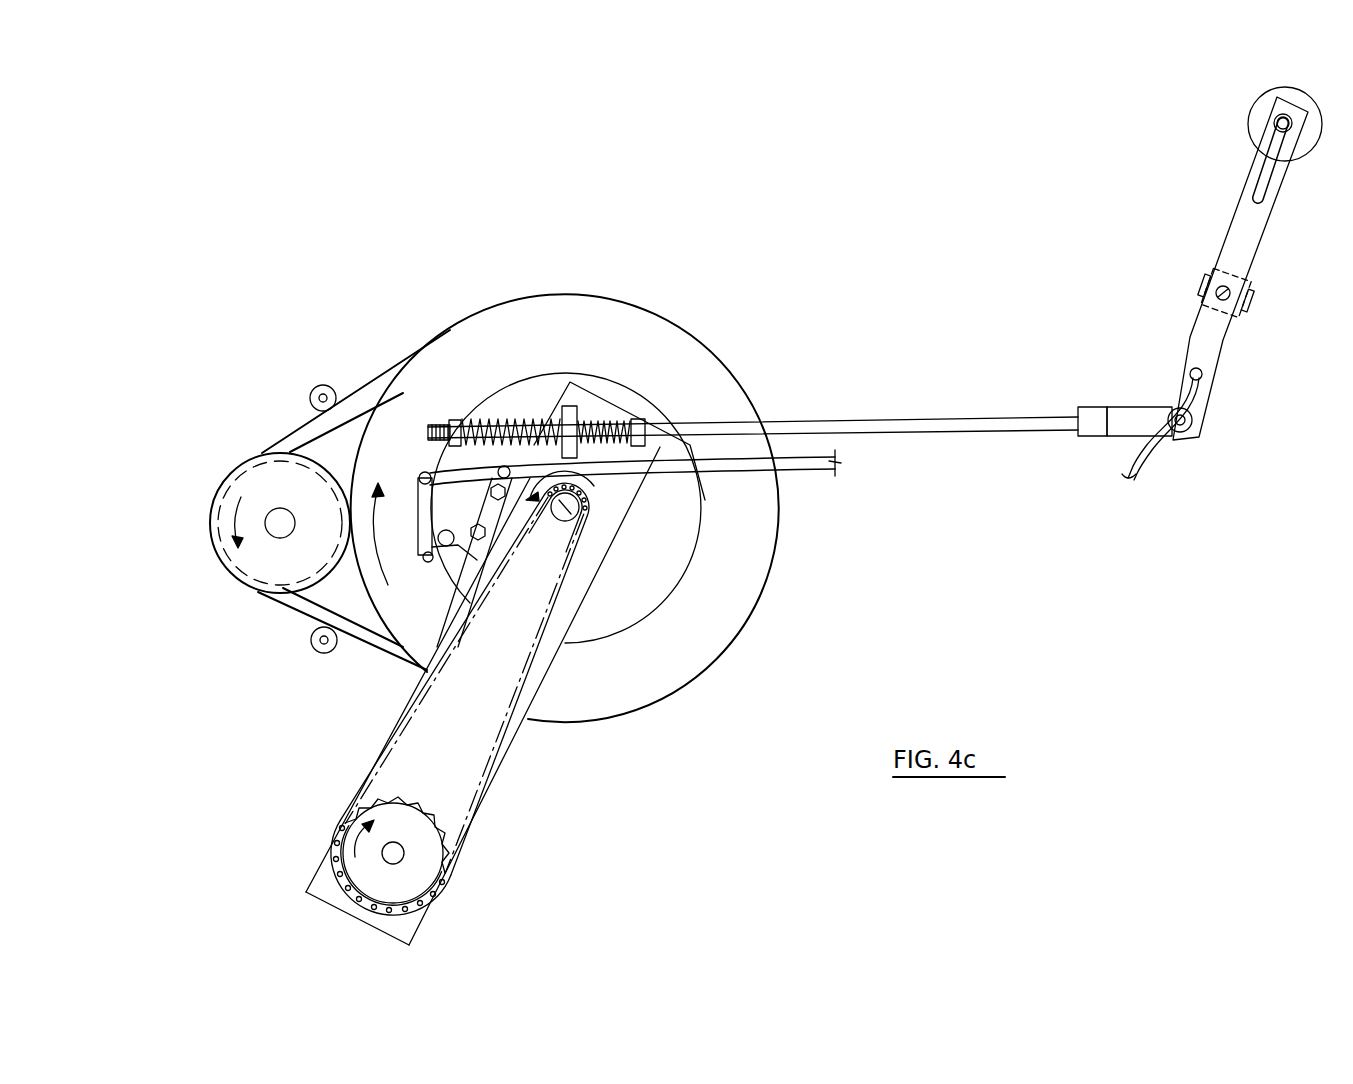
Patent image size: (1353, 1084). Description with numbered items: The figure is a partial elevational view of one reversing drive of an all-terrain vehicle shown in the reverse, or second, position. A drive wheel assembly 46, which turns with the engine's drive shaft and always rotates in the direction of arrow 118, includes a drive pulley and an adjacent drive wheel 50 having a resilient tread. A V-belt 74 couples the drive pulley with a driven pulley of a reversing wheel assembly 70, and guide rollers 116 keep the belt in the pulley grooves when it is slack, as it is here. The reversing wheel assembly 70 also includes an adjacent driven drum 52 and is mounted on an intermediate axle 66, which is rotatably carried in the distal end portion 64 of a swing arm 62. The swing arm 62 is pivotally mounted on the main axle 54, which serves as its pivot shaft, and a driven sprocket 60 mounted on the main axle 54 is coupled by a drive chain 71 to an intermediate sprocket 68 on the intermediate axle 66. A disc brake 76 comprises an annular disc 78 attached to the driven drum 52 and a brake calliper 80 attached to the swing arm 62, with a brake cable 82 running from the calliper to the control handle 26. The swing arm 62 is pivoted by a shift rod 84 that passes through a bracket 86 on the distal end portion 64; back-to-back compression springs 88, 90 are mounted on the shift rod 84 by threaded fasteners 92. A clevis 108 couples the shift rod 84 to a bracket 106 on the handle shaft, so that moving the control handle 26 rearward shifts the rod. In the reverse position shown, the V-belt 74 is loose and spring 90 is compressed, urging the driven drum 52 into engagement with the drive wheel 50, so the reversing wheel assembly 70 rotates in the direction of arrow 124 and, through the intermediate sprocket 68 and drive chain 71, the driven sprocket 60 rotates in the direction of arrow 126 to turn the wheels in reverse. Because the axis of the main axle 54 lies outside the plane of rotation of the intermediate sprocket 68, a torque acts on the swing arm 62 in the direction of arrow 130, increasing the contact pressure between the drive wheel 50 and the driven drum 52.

The control handle 26 is at (1270, 265).
The drive wheel assembly 46 is at (208, 518).
The drive wheel 50 is at (252, 477).
The driven drum 52 is at (358, 572).
The main axle 54 is at (385, 853).
The driven sprocket 60 is at (430, 858).
The swing arm 62 is at (513, 740).
The distal end portion 64 is at (585, 395).
The intermediate axle 66 is at (580, 510).
The intermediate sprocket 68 is at (558, 528).
The reversing wheel assembly 70 is at (630, 302).
The drive chain 71 is at (380, 752).
The V-belt 74 is at (380, 385).
The disc brake 76 is at (440, 583).
The annular disc 78 is at (715, 633).
The brake calliper 80 is at (418, 548).
The brake cable 82 is at (807, 470).
The shift rod 84 is at (860, 418).
The bracket 86 is at (567, 405).
The compression spring 88 is at (505, 424).
The compression spring 90 is at (610, 420).
The threaded fastener 92 is at (455, 420).
The bracket 106 is at (1226, 373).
The clevis 108 is at (1133, 405).
The guide roller 116 is at (313, 389).
The arrow 118 is at (236, 538).
The arrow 124 is at (384, 502).
The arrow 126 is at (340, 830).
The arrow 130 is at (572, 478).